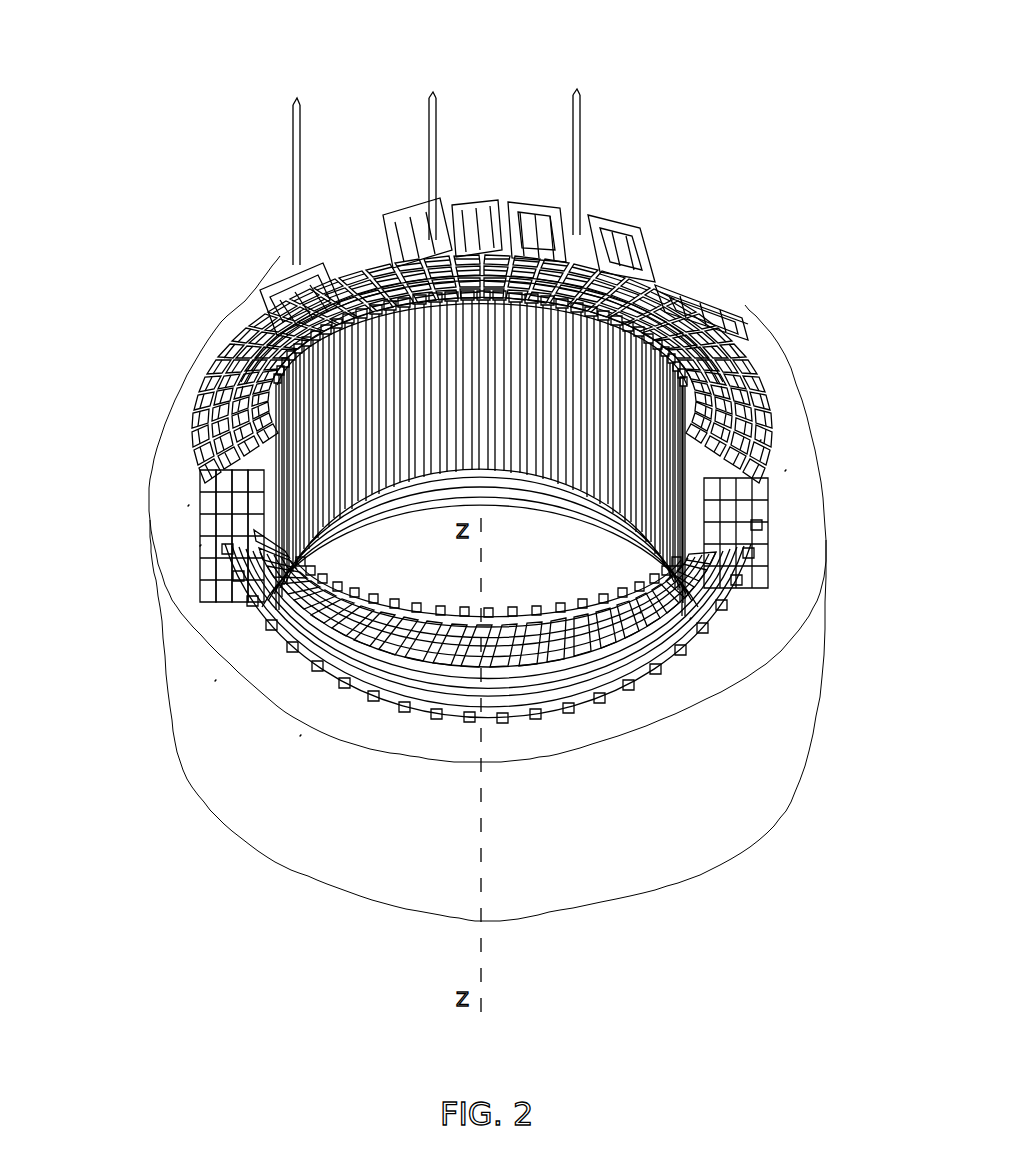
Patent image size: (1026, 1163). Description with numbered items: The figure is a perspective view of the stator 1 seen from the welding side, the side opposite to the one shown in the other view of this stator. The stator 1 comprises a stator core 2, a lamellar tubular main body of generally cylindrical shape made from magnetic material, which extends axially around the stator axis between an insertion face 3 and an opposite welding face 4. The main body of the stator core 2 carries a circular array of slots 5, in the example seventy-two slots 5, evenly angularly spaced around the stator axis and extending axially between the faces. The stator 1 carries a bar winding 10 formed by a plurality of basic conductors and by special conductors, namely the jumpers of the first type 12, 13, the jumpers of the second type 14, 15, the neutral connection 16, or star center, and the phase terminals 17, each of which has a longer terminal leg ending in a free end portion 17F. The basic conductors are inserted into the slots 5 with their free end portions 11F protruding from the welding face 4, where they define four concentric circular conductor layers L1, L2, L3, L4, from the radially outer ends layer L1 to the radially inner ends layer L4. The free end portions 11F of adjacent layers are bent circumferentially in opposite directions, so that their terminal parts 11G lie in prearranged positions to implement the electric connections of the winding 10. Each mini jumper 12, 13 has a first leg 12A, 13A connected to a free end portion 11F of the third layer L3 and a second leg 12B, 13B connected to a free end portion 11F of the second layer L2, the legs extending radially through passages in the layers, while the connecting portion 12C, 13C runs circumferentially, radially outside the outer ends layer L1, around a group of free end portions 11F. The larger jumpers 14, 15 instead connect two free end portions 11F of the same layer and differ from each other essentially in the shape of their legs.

The stator 1 is at (170, 175).
The stator core 2 is at (730, 782).
The insertion face 3 is at (213, 815).
The welding face 4 is at (280, 780).
The slots 5 is at (613, 693).
The bar winding 10 is at (195, 385).
The free end portions 11F is at (305, 300).
The terminal parts 11G is at (205, 360).
The jumper of the first type 12 is at (429, 242).
The first leg of jumper 12A is at (612, 232).
The second leg of jumper 12B is at (525, 198).
The connecting portion of jumper 12C is at (598, 208).
The jumper of the first type 13 is at (663, 215).
The first leg of jumper 13A is at (748, 332).
The second leg of jumper 13B is at (702, 300).
The connecting portion of jumper 13C is at (748, 318).
The jumper of the second type 14 is at (480, 283).
The jumper of the second type 15 is at (343, 337).
The neutral connection 16 is at (765, 337).
The phase terminal 17 is at (486, 133).
The free end portion of terminal 17F is at (298, 108).
The radially outer ends layer L1 is at (270, 580).
The second conductor layer L2 is at (262, 545).
The third conductor layer L3 is at (263, 540).
The radially inner ends layer L4 is at (267, 513).